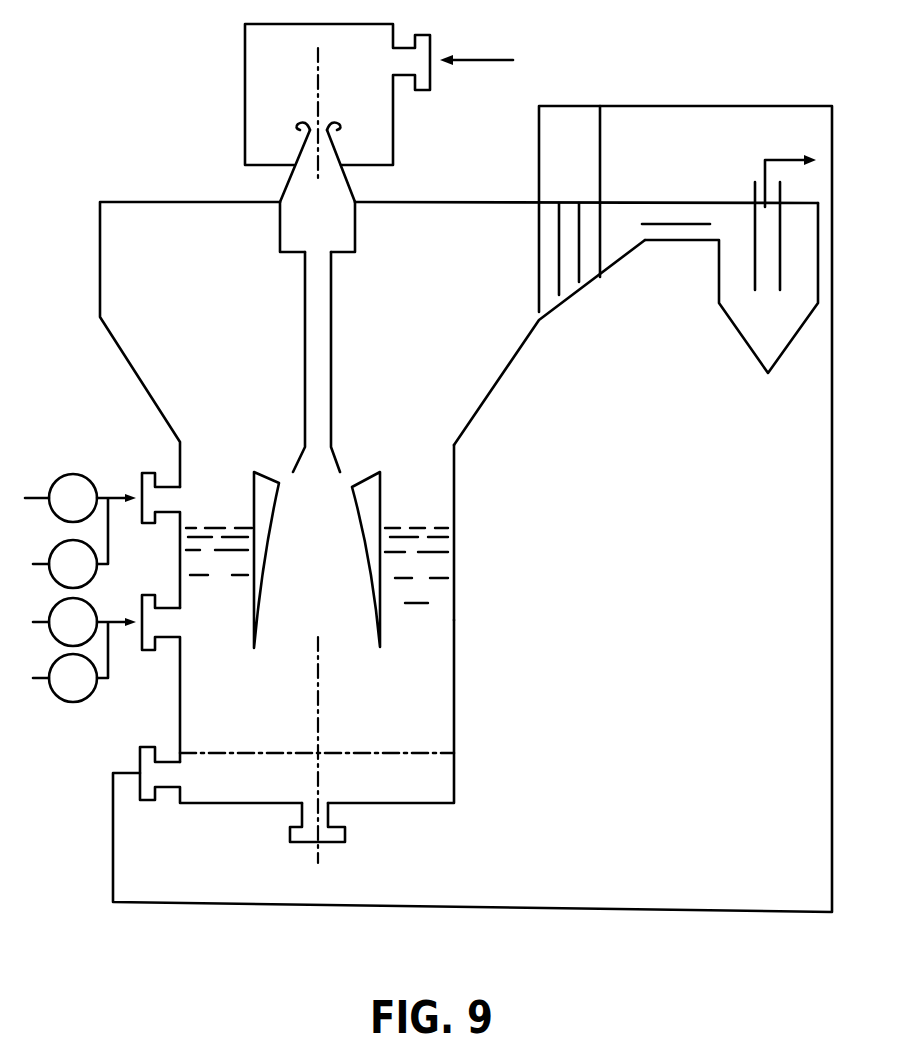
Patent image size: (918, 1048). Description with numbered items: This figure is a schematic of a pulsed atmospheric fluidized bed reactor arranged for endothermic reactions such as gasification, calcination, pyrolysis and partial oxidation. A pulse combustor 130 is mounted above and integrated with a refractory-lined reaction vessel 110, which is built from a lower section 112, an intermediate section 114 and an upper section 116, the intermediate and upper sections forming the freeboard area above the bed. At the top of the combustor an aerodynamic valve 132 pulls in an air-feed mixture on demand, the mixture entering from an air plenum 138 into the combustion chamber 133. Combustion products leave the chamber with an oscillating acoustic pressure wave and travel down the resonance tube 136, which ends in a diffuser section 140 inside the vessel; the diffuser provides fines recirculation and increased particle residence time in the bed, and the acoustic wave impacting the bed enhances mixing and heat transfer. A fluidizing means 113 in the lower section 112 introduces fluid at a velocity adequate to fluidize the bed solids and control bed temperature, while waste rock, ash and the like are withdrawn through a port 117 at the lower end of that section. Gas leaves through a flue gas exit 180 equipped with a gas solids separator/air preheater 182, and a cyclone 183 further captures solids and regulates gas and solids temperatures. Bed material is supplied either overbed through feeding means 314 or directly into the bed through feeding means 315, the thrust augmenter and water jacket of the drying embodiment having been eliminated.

The reaction vessel 110 is at (483, 403).
The lower section 112 is at (455, 703).
The fluidizing means 113 is at (420, 757).
The intermediate section 114 is at (455, 450).
The upper section 116 is at (510, 363).
The port 117 is at (330, 808).
The pulse combustor 130 is at (245, 179).
The aerodynamic valve 132 is at (298, 127).
The combustion chamber 133 is at (350, 190).
The resonance tube 136 is at (333, 340).
The air plenum 138 is at (394, 138).
The diffuser section 140 is at (372, 525).
The flue gas exit 180 is at (681, 200).
The gas solids separator/air preheater 182 is at (563, 297).
The cyclone 183 is at (748, 346).
The overbed feeding means 314 is at (172, 514).
The in-bed feeding means 315 is at (168, 640).